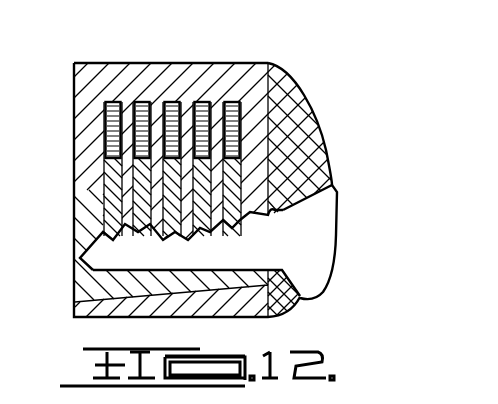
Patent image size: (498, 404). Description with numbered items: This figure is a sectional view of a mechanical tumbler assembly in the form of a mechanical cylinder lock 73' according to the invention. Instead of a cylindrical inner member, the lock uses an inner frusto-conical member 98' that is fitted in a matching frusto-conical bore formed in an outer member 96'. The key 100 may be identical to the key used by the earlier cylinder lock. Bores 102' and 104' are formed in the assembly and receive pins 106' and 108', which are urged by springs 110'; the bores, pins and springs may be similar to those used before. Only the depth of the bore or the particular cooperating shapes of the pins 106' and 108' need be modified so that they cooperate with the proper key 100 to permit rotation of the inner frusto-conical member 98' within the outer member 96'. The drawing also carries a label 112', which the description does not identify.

The outer member 96' is at (187, 158).
The mechanical cylinder lock 73' is at (171, 128).
The springs 110' is at (257, 96).
The pins 106' is at (314, 138).
The pins 108' is at (325, 139).
The key 100 is at (322, 218).
The bores 102' is at (65, 130).
The bores 104' is at (133, 169).
The inner frusto-conical member 98' is at (143, 235).
The cavity 112' is at (196, 264).